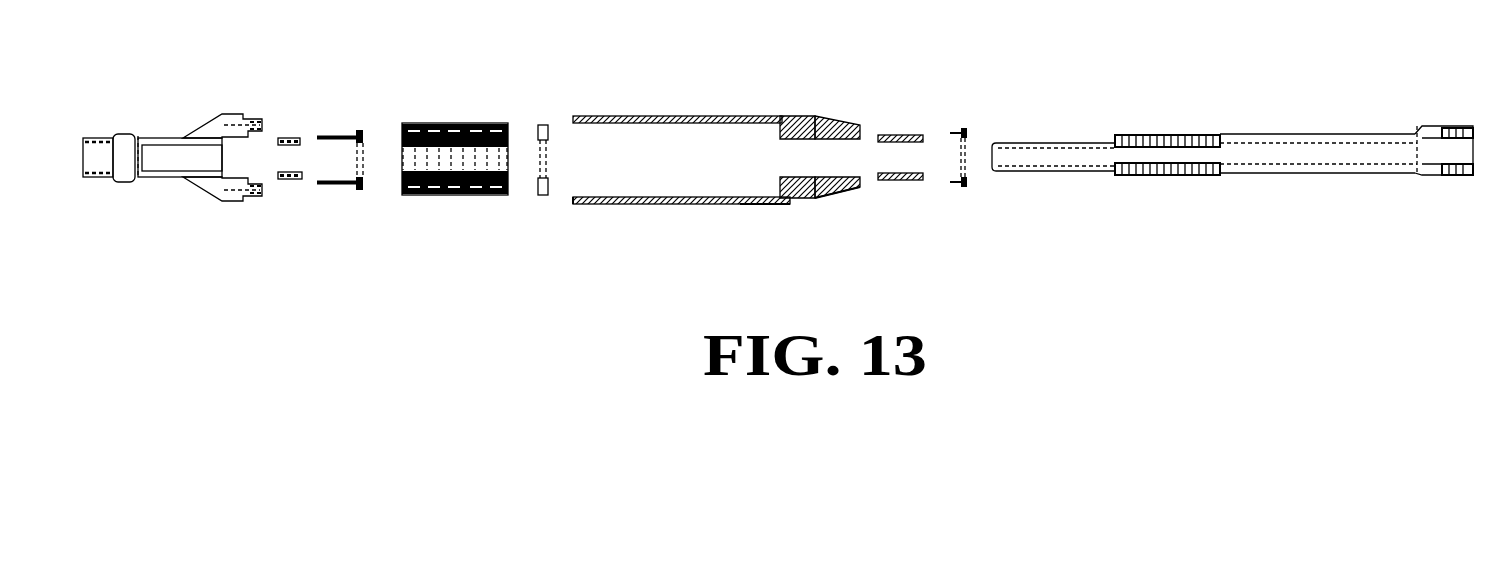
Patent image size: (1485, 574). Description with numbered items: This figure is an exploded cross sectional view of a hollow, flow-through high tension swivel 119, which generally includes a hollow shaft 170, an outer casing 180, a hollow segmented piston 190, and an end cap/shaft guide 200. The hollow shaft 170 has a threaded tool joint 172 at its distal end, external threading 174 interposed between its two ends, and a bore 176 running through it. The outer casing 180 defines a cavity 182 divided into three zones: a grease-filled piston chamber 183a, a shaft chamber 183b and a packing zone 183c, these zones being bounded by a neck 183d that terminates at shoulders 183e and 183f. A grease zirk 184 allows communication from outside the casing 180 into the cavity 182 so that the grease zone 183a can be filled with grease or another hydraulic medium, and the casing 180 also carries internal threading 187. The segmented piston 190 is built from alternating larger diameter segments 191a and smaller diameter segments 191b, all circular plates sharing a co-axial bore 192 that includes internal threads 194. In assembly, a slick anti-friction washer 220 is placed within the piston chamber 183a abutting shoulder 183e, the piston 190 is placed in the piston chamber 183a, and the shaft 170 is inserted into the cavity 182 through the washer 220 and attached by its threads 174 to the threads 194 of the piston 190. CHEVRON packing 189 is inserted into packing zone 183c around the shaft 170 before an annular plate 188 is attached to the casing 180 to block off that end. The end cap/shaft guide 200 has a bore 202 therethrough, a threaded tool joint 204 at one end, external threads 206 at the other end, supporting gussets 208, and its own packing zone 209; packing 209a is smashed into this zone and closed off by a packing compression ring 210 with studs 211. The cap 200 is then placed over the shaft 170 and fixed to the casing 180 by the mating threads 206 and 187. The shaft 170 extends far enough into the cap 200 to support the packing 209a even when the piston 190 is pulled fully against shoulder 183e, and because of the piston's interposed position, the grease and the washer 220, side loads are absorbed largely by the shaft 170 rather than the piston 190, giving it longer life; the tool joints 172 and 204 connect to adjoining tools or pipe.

The hollow, high tension swivel 119 is at (290, 275).
The hollow shaft 170 is at (1258, 117).
The threaded tool joint 172 is at (1447, 127).
The external threading 174 is at (1130, 135).
The bore 176 is at (1335, 152).
The outer casing 180 is at (698, 119).
The cavity 182 is at (705, 152).
The piston chamber 183a is at (681, 181).
The shaft chamber 183b is at (797, 174).
The packing zone 183c is at (837, 138).
The neck 183d is at (810, 120).
The shoulder 183e is at (778, 183).
The shoulder 183f is at (818, 177).
The grease zirk 184 is at (817, 199).
The internal threading 187 is at (578, 197).
The annular plate 188 is at (967, 187).
The packing 189 is at (905, 181).
The segmented piston 190 is at (450, 102).
The larger diameter segments 191a is at (488, 127).
The smaller diameter segments 191b is at (413, 180).
The co-axial bore 192 is at (402, 148).
The internal threads 194 is at (503, 177).
The end cap/shaft guide 200 is at (160, 112).
The bore 202 is at (182, 156).
The threaded tool joint 204 is at (125, 183).
The external threads 206 is at (255, 114).
The gussets 208 is at (213, 183).
The packing zone 209 is at (243, 177).
The packing 209a is at (288, 179).
The packing compression ring 210 is at (363, 190).
The studs 211 is at (333, 135).
The anti-friction washer 220 is at (537, 197).